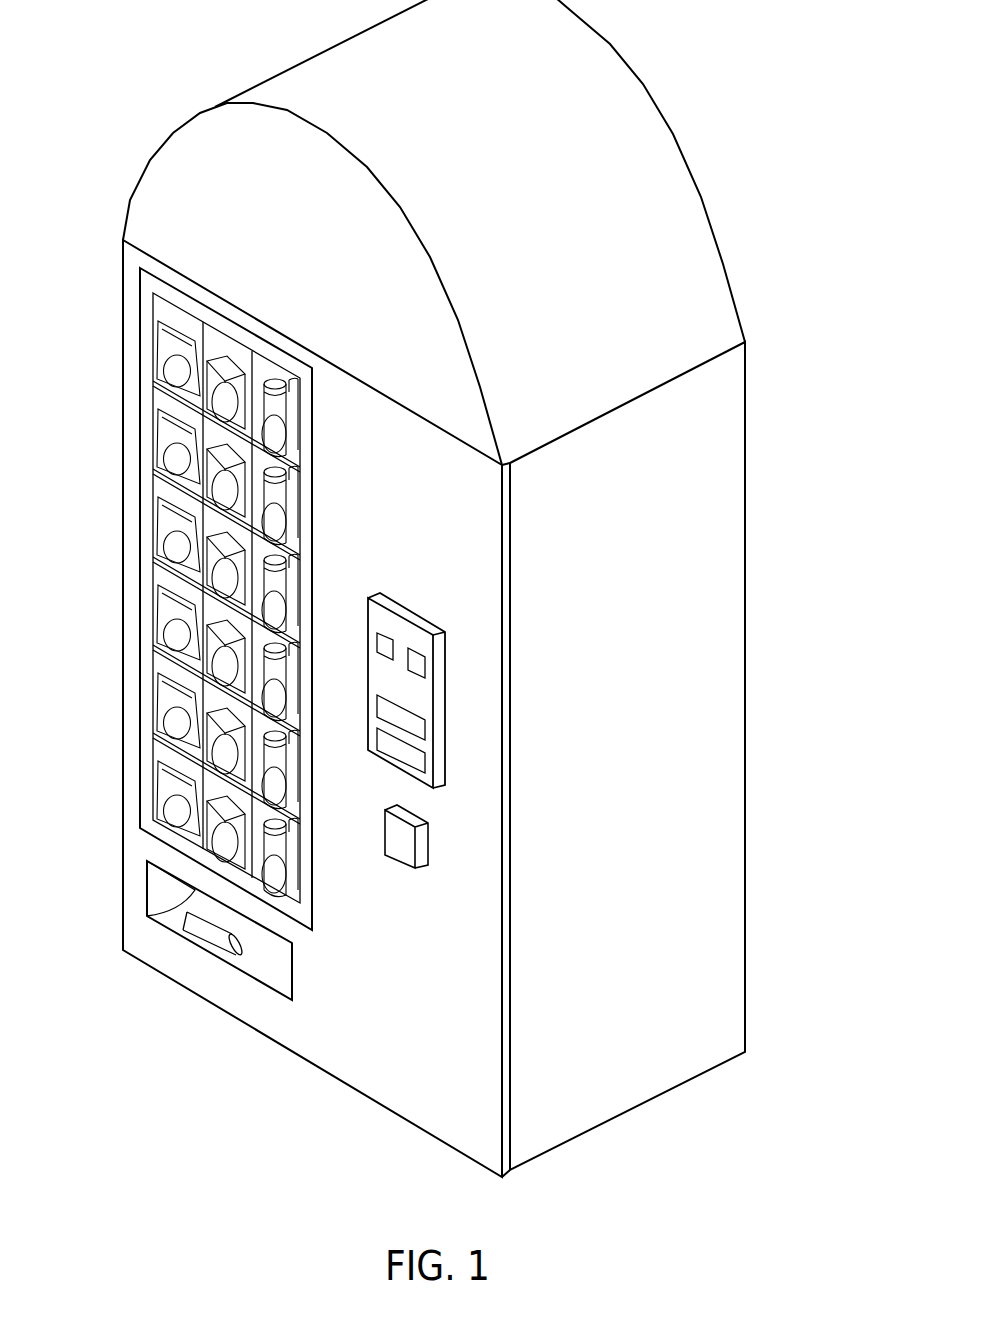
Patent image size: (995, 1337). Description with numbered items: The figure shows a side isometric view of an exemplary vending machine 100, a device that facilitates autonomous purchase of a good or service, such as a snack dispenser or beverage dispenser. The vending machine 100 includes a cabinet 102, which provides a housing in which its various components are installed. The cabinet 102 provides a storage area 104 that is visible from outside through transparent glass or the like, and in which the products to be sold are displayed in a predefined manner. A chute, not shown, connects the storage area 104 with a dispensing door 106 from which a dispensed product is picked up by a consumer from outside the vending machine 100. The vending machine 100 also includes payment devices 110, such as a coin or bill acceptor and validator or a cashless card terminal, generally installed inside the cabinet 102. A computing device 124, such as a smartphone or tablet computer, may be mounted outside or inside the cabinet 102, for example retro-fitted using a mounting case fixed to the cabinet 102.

The vending machine 100 is at (712, 60).
The cabinet 102 is at (737, 538).
The storage area 104 is at (153, 655).
The dispensing door 106 is at (163, 892).
The payment devices 110 is at (429, 917).
The computing device 124 is at (429, 690).